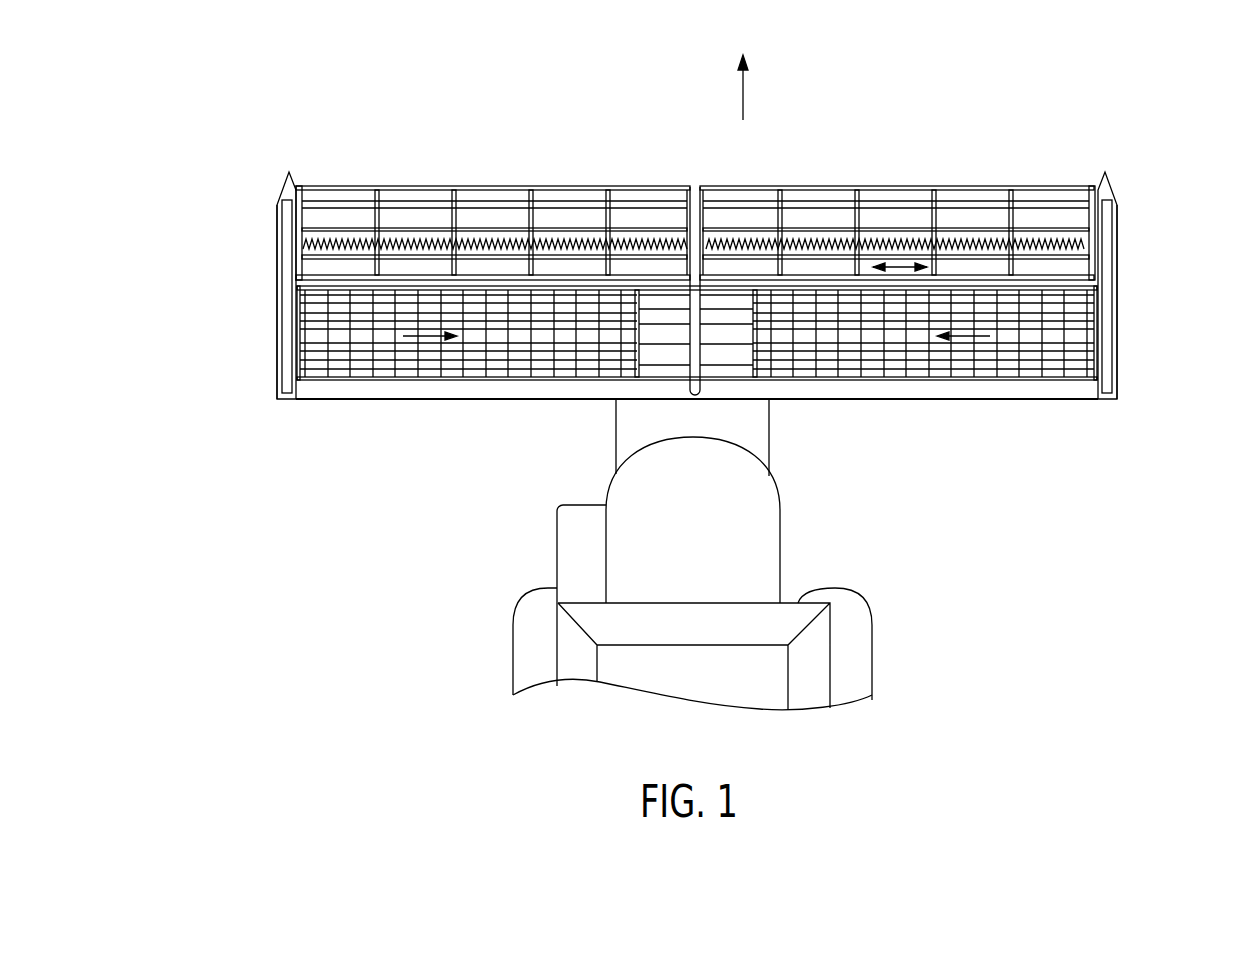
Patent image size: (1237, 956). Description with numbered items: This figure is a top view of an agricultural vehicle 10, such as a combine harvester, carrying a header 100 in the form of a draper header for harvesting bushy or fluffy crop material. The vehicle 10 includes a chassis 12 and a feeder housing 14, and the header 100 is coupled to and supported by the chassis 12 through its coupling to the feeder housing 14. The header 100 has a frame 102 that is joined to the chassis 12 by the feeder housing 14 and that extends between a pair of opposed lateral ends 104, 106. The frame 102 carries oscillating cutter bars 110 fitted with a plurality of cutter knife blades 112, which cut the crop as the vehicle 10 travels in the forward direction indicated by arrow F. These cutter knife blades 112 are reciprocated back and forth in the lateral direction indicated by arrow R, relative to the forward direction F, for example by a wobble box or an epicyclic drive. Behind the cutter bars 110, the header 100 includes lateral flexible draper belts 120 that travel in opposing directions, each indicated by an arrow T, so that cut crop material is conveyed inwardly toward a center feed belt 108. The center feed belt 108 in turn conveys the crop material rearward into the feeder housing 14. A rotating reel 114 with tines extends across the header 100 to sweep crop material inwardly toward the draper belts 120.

The agricultural vehicle 10 is at (832, 655).
The chassis 12 is at (782, 533).
The feeder housing 14 is at (768, 430).
The header 100 is at (1133, 398).
The frame 102 is at (520, 401).
The lateral end 104 is at (270, 335).
The lateral end 106 is at (1133, 334).
The center feed belt 108 is at (668, 321).
The oscillating cutter bar 110 is at (412, 233).
The cutter knife blade 112 is at (482, 243).
The rotating reel 114 is at (975, 186).
The draper belt 120 is at (325, 352).
The forward direction F is at (743, 97).
The lateral direction R is at (897, 265).
The direction of travel T is at (430, 337).